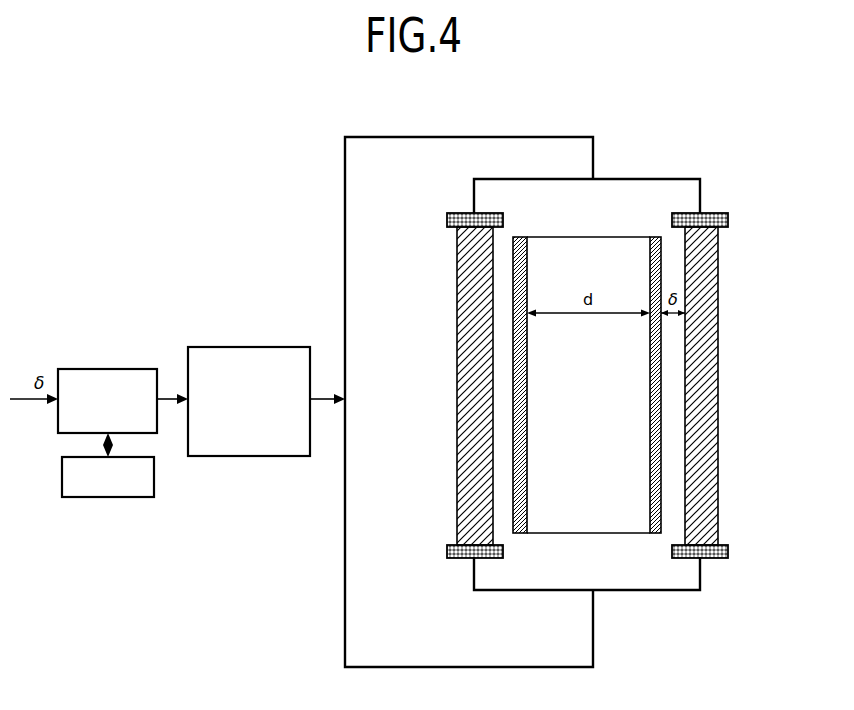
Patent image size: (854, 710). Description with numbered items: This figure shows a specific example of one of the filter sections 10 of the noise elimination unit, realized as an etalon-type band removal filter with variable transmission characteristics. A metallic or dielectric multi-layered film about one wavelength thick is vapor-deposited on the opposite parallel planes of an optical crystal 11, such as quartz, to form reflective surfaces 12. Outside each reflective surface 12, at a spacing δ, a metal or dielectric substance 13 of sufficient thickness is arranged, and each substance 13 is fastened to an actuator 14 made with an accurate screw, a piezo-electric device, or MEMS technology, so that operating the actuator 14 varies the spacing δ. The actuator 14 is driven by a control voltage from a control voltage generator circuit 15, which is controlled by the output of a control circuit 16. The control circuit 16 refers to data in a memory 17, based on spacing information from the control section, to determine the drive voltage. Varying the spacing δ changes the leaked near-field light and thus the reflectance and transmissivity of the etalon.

The filter section 10 is at (221, 167).
The optical crystal 11 is at (605, 533).
The reflective surface 12 is at (517, 533).
The metal (or dielectric) substance 13 is at (457, 393).
The actuator 14 is at (447, 220).
The control voltage generator circuit 15 is at (240, 347).
The control circuit 16 is at (103, 369).
The memory 17 is at (110, 497).